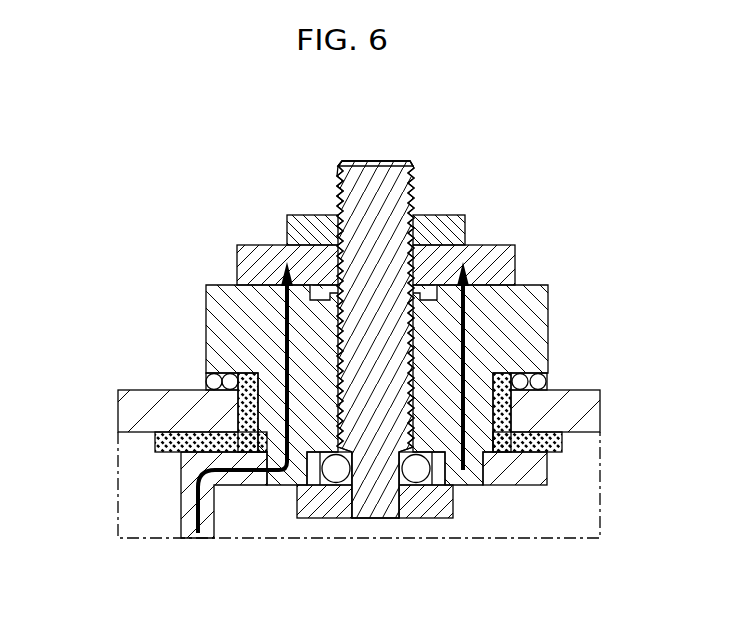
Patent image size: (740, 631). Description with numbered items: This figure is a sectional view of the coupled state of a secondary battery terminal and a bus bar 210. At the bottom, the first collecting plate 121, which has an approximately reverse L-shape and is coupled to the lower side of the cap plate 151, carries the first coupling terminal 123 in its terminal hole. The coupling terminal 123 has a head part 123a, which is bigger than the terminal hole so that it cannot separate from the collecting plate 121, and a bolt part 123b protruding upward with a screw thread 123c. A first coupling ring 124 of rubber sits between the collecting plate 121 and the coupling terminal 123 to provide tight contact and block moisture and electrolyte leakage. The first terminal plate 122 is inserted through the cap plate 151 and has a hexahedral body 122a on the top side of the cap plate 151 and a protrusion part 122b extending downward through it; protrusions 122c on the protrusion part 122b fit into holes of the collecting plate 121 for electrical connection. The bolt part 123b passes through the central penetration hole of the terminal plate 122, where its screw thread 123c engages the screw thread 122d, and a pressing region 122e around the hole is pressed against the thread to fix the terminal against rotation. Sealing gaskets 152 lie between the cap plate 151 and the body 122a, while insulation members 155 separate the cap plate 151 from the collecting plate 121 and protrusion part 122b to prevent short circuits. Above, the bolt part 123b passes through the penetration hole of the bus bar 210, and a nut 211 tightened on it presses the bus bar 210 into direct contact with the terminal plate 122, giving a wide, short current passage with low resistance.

The first collecting plate 121 is at (178, 526).
The first terminal plate 122 is at (376, 400).
The body 122a is at (208, 301).
The protrusion part 122b is at (272, 408).
The protrusions 122c is at (290, 473).
The screw thread 122d is at (333, 412).
The pressing region 122e is at (328, 292).
The first coupling terminal 123 is at (315, 296).
The head part 123a is at (327, 503).
The bolt part 123b is at (340, 168).
The screw thread 123c is at (338, 204).
The first coupling ring 124 is at (420, 477).
The cap plate 151 is at (126, 409).
The sealing gaskets 152 is at (550, 381).
The insulation members 155 is at (165, 441).
The bus bar 210 is at (497, 262).
The nut 211 is at (437, 224).